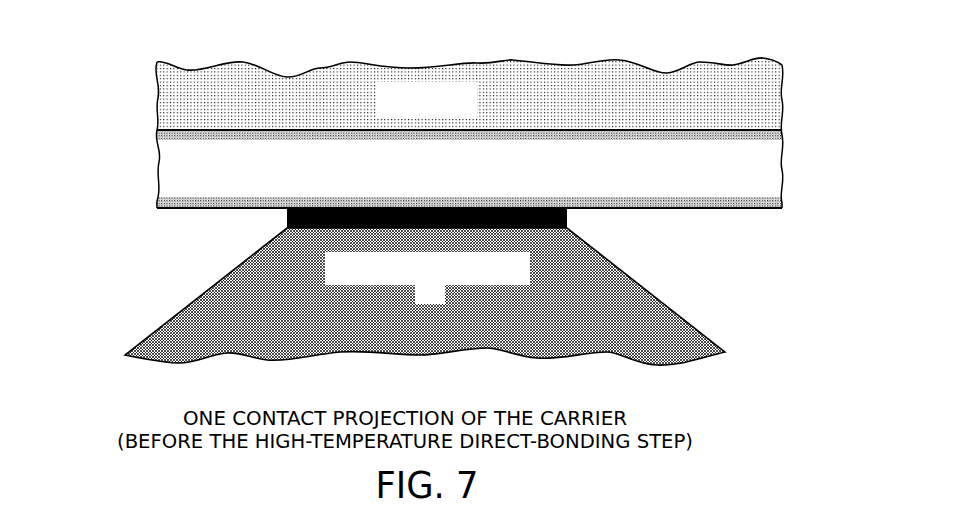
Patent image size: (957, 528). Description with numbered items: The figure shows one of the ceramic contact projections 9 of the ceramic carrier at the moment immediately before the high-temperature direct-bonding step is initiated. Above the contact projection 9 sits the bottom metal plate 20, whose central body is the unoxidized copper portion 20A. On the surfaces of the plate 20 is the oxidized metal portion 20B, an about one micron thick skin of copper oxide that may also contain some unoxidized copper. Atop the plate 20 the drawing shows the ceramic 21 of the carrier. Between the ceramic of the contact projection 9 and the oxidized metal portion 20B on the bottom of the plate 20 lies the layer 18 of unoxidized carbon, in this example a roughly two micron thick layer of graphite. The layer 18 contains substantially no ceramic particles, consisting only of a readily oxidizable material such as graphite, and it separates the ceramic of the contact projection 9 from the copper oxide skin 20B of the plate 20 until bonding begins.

The ceramic 21 is at (419, 115).
The bottom metal plate 20 is at (414, 156).
The central unoxidized copper portion 20A is at (439, 185).
The oxidized metal portion 20B is at (157, 205).
The layer of unoxidized carbon 18 is at (575, 221).
The contact projection 9 is at (433, 304).